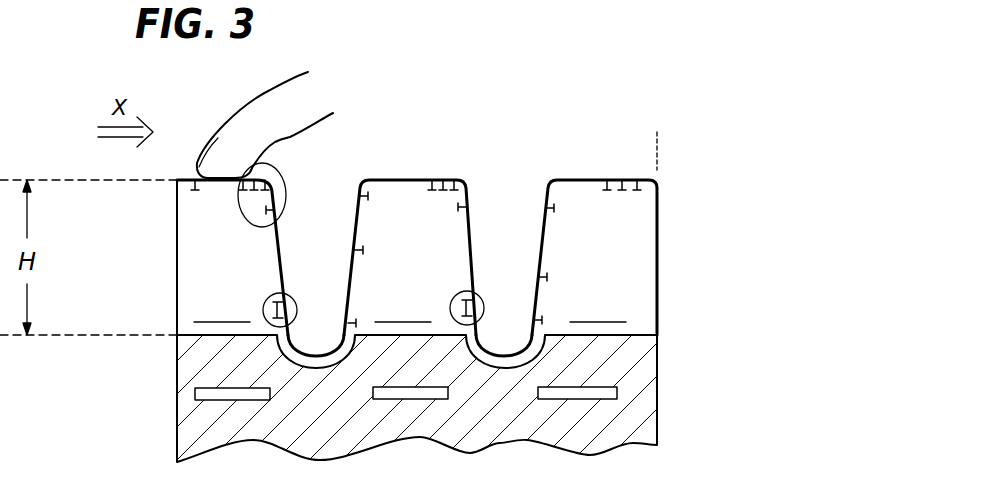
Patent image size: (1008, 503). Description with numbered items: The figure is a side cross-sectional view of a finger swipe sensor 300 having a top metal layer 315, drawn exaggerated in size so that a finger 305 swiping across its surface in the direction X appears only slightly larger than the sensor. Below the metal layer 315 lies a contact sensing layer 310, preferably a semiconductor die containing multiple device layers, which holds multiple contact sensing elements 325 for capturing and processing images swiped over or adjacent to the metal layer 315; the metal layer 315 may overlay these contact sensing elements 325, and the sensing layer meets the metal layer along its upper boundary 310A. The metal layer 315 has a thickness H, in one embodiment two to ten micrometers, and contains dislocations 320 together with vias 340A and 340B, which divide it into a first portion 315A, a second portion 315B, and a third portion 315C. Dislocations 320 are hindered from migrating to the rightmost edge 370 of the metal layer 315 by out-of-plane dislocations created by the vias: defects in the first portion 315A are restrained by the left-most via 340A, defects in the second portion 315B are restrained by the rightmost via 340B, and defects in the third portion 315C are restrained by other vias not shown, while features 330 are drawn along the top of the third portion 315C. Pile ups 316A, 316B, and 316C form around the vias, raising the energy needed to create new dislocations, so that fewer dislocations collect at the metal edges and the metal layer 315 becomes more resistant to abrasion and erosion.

The finger swipe sensor 300 is at (687, 89).
The finger 305 is at (268, 91).
The contact sensing layer 310 is at (389, 405).
The substrate top surface 310A is at (177, 348).
The metal layer 315 is at (465, 237).
The first portion 315A is at (232, 257).
The second portion 315B is at (410, 257).
The third portion 315C is at (645, 205).
The pile up 316A is at (238, 210).
The pile up 316B is at (263, 303).
The pile up 316C is at (451, 295).
The dislocations 320 is at (177, 186).
The contact sensing elements 325 is at (197, 393).
The top sensing features 330 is at (600, 175).
The via 340A is at (318, 326).
The via 340B is at (507, 327).
The rightmost edge 370 is at (657, 150).